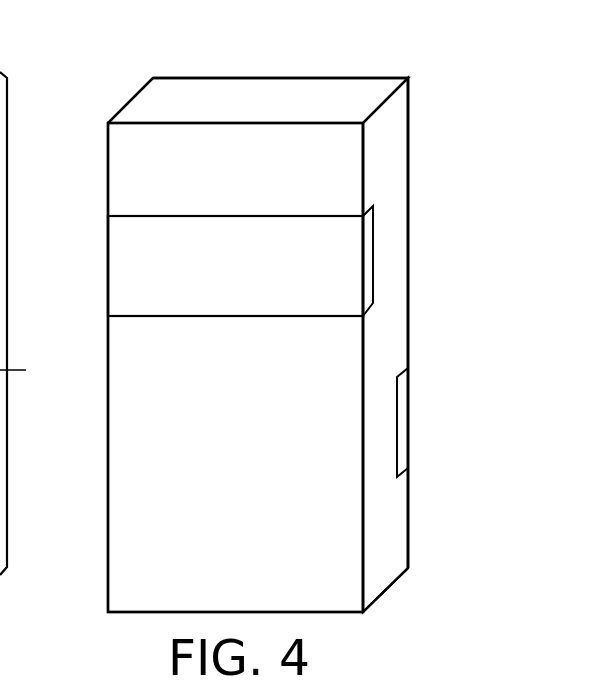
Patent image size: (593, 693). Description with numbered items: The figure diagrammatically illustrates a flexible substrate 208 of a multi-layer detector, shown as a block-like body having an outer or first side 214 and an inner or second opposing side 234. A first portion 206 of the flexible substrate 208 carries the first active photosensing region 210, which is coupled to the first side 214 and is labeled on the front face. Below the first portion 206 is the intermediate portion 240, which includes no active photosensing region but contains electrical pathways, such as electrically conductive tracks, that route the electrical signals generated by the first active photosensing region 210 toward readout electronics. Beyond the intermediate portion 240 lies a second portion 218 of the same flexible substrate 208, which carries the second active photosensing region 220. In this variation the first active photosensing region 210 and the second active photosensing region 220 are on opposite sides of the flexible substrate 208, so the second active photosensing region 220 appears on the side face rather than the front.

The first portion 206 is at (108, 277).
The flexible substrate 208 is at (143, 368).
The first active photosensing region 210 is at (342, 262).
The first side 214 is at (127, 113).
The second portion 218 is at (412, 449).
The second active photosensing region 220 is at (403, 415).
The second opposing side 234 is at (220, 77).
The intermediate portion 240 is at (385, 337).